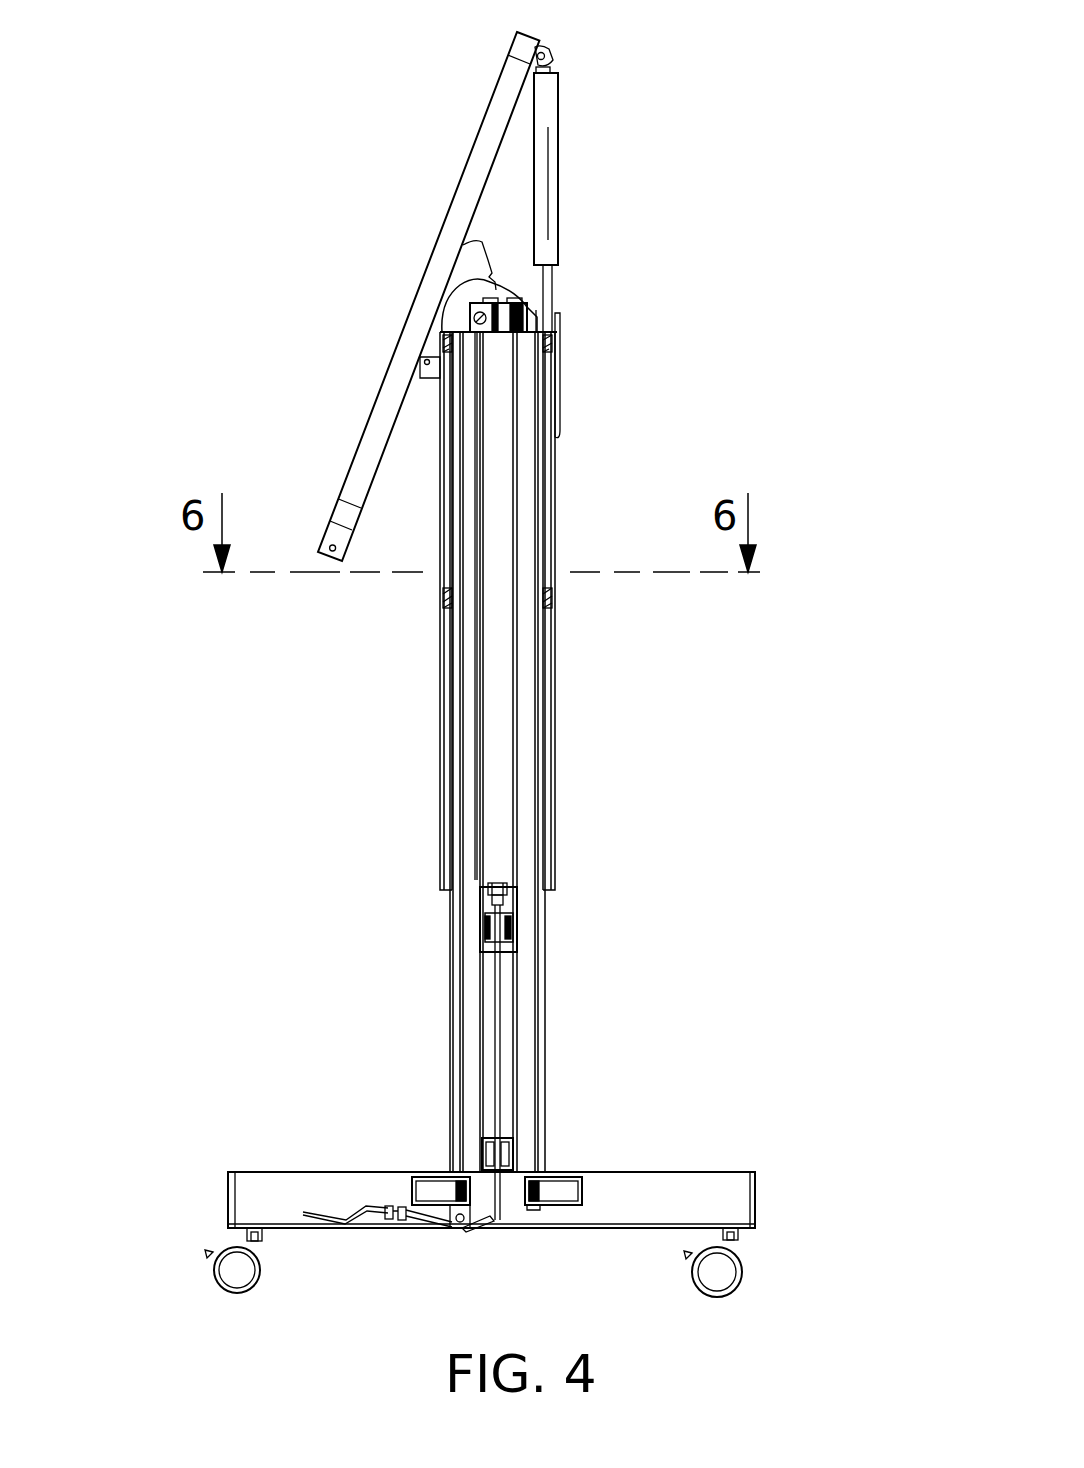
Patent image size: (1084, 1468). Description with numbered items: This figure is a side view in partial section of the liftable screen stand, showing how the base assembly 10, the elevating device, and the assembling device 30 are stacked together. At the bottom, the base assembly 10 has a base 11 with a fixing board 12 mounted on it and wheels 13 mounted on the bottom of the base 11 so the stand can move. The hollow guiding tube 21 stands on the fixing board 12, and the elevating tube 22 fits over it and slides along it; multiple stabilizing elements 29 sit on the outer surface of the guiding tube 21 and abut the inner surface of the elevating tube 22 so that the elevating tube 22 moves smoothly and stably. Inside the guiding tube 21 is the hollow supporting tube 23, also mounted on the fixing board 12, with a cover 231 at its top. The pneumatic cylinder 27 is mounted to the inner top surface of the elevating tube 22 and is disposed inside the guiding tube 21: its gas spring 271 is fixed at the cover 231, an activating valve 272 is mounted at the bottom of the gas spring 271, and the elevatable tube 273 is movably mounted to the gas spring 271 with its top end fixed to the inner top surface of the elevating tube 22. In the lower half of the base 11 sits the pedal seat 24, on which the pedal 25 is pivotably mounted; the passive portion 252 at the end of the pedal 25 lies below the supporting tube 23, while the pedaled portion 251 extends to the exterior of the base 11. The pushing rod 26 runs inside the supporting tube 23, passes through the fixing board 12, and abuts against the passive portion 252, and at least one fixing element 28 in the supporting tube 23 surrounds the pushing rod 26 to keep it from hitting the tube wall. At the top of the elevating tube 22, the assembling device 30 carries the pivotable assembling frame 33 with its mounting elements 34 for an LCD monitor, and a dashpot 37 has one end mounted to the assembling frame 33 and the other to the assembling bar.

The base assembly 10 is at (722, 1162).
The base 11 is at (643, 1185).
The fixing board 12 is at (520, 1172).
The wheels 13 is at (720, 1280).
The guiding tube 21 is at (545, 748).
The elevating tube 22 is at (555, 680).
The supporting tube 23 is at (513, 1030).
The pedal seat 24 is at (462, 1226).
The pedal 25 is at (374, 1240).
The pushing rod 26 is at (498, 990).
The pneumatic cylinder 27 is at (513, 567).
The fixing element 28 is at (508, 928).
The stabilizing elements 29 is at (549, 600).
The assembling device 30 is at (428, 140).
The assembling frame 33 is at (518, 45).
The mounting elements 34 is at (447, 245).
The dashpot 37 is at (545, 178).
The cover 231 is at (510, 885).
The pedaled portion 251 is at (320, 1222).
The passive portion 252 is at (484, 1216).
The gas spring 271 is at (498, 863).
The activating valve 272 is at (496, 905).
The elevatable tube 273 is at (497, 515).